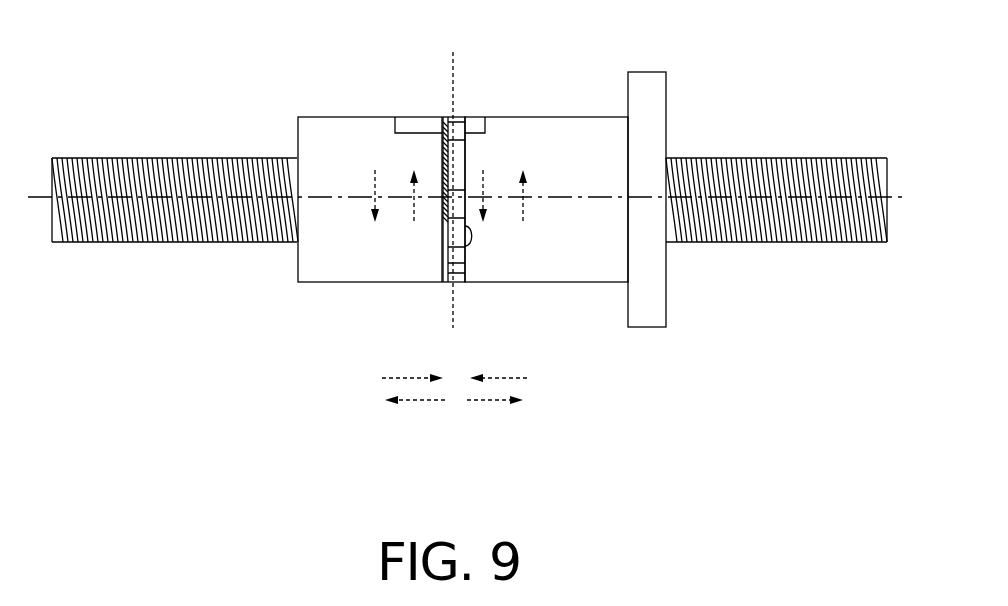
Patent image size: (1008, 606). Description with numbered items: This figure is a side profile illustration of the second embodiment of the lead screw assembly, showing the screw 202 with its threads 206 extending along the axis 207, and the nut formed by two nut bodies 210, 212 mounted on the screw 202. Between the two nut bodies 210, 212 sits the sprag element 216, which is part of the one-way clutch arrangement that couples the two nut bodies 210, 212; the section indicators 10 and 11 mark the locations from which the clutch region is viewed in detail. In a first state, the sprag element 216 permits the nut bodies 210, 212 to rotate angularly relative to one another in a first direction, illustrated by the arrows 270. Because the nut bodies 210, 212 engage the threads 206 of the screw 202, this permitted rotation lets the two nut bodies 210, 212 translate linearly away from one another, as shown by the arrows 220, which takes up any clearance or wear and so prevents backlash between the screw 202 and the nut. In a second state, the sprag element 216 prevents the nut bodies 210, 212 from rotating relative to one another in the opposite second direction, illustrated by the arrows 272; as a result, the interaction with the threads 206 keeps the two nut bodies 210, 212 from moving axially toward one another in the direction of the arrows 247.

The section view indicator 10 is at (395, 133).
The section line 11- 11 is at (453, 52).
The screw 202 is at (757, 240).
The threads 206 is at (782, 160).
The axis 207 is at (893, 195).
The nut body 210 is at (310, 148).
The nut body 212 is at (588, 132).
The sprag element 216 is at (453, 128).
The arrows 220 is at (425, 400).
The arrows 247 is at (397, 380).
The arrows 270 is at (408, 222).
The arrows 272 is at (372, 183).